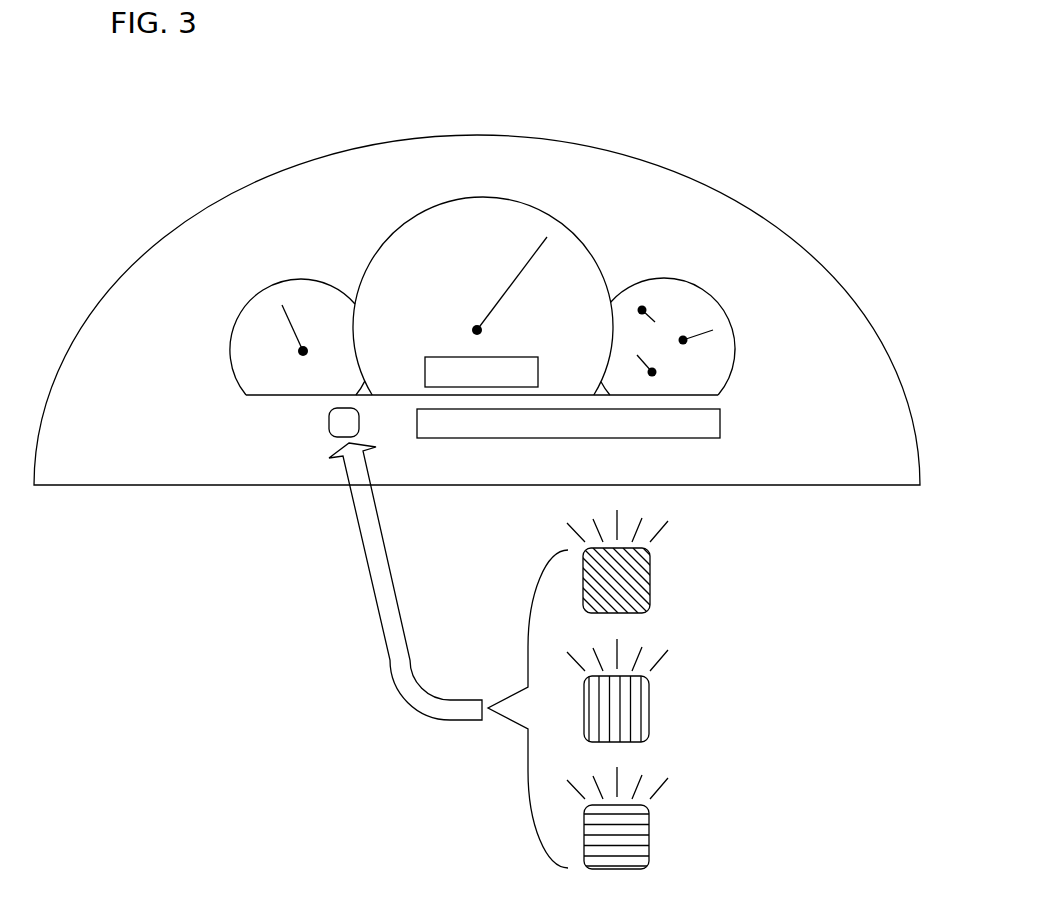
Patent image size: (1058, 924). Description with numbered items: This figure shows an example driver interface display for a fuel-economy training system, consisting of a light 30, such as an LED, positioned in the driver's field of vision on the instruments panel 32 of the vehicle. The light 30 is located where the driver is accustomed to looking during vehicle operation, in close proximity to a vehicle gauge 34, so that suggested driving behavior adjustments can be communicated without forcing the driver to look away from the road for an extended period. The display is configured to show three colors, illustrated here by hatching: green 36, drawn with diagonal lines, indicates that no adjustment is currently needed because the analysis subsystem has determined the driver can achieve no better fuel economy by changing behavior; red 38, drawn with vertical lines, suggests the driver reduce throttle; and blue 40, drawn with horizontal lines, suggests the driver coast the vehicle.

The light 30 is at (314, 422).
The instruments panel 32 is at (812, 239).
The vehicle gauge 34 is at (372, 240).
The green color 36 is at (664, 580).
The red color 38 is at (664, 708).
The blue color 40 is at (664, 837).